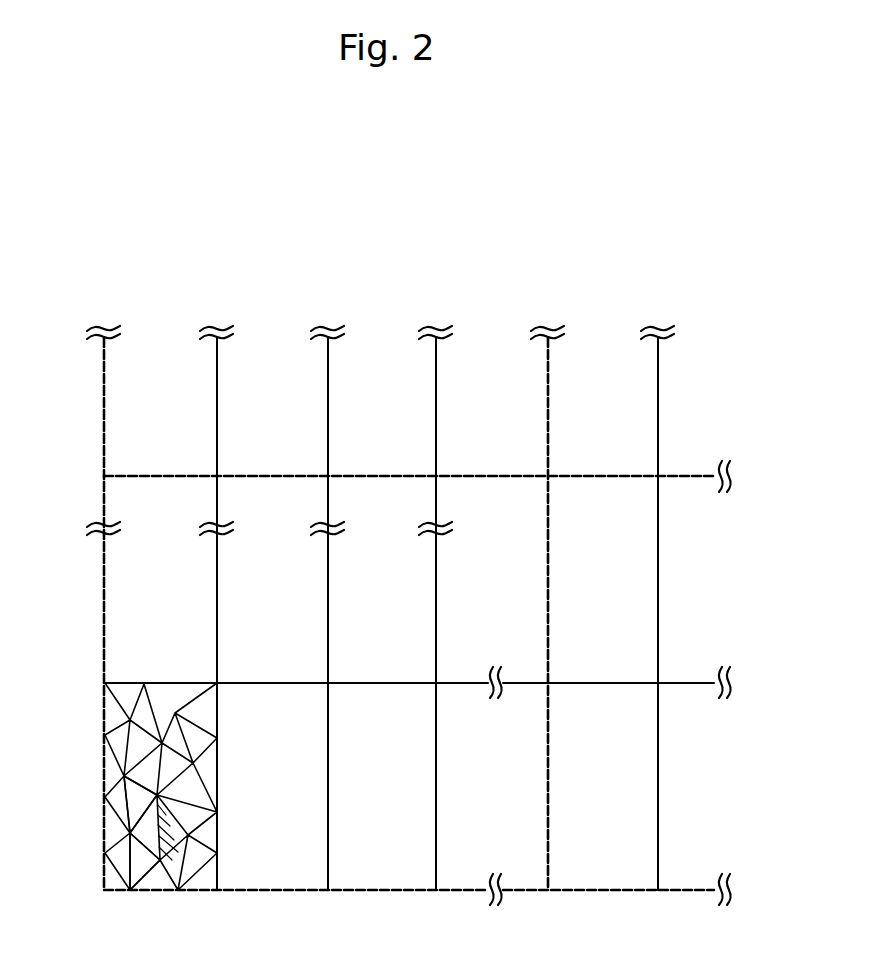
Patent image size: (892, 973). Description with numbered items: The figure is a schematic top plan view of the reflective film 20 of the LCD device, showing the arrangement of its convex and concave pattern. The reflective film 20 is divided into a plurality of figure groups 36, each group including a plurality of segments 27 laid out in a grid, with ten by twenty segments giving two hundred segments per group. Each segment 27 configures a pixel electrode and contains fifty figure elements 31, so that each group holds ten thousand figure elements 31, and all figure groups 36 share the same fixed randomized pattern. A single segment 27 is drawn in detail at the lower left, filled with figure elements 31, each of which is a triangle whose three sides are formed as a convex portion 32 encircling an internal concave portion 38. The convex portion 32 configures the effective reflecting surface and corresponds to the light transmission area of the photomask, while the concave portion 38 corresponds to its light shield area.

The reflective film 20 is at (652, 264).
The segment 27 is at (270, 870).
The figure element 31 is at (157, 868).
The convex portion 32 is at (137, 750).
The figure group 36 is at (382, 893).
The concave portion 38 is at (125, 757).